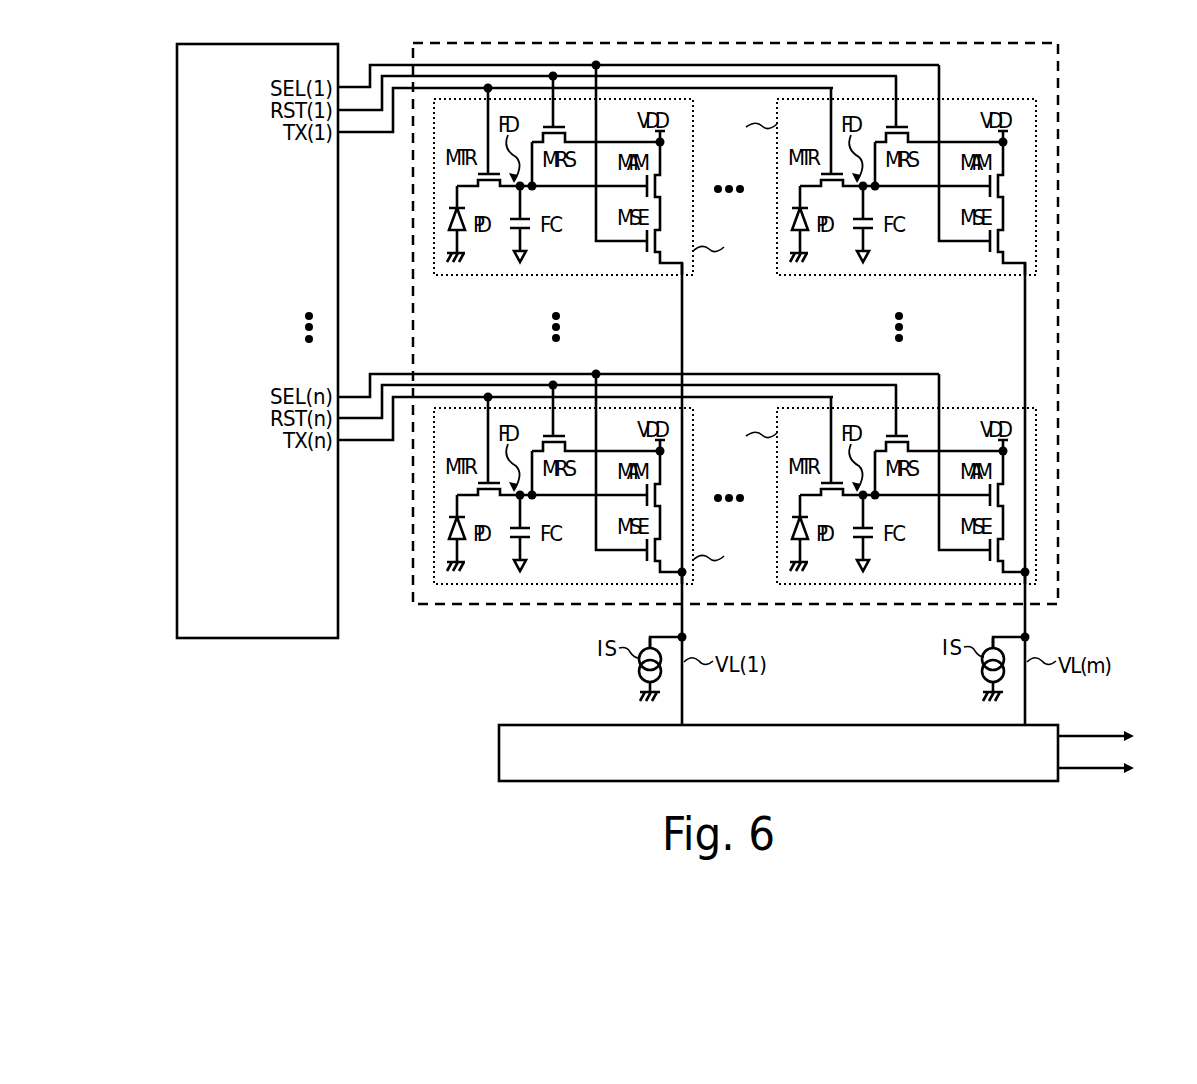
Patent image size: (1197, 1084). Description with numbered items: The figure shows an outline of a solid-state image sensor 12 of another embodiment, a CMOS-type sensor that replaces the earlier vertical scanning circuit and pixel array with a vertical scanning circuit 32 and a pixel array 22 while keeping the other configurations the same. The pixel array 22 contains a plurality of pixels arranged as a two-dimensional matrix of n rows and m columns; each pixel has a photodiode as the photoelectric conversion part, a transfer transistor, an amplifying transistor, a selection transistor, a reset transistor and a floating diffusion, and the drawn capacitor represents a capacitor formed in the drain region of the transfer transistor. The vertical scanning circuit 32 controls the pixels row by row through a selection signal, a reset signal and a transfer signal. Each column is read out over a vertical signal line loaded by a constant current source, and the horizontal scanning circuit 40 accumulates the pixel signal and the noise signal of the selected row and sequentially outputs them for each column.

The solid-state image sensor 12 is at (1122, 88).
The pixel array 22 is at (1058, 297).
The vertical scanning circuit 32 is at (270, 640).
The horizontal scanning circuit 40 is at (499, 756).